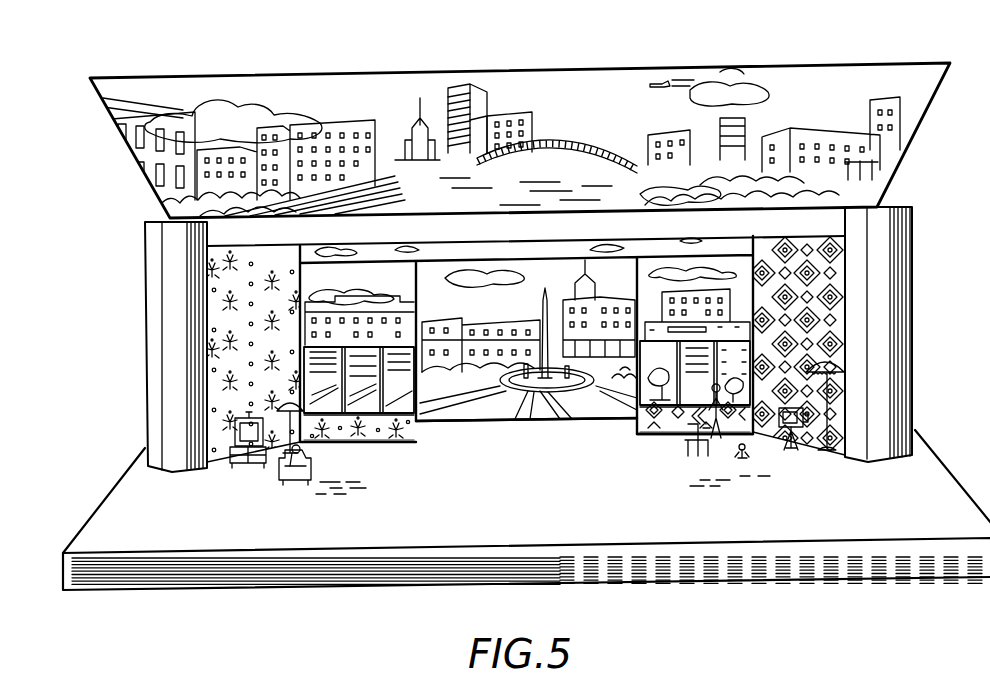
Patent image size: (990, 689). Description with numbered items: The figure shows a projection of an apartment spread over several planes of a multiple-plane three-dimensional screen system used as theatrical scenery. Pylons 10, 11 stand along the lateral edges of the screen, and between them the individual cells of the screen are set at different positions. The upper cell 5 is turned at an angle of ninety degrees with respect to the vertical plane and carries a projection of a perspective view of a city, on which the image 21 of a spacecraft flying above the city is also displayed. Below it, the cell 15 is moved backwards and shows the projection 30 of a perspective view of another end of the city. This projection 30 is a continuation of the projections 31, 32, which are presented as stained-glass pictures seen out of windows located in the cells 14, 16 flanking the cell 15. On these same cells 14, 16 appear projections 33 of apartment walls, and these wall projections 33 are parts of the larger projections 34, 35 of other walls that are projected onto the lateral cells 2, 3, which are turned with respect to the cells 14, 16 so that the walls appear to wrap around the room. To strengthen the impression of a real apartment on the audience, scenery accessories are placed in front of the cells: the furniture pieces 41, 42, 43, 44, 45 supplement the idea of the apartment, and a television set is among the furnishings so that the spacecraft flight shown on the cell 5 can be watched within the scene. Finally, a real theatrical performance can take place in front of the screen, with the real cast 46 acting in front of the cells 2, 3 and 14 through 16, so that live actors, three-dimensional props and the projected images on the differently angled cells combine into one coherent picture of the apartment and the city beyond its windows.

The cell 5 is at (544, 72).
The projection 30 is at (503, 114).
The image 21 is at (661, 78).
The pylon 10 is at (172, 303).
The pylon 11 is at (880, 378).
The cell 2 is at (218, 374).
The cell 3 is at (851, 329).
The projection 31 is at (384, 322).
The projection 32 is at (670, 301).
The cell 14 is at (372, 444).
The projection 33 is at (403, 442).
The cell 15 is at (532, 425).
The cell 16 is at (673, 437).
The projection 34 is at (228, 456).
The furniture piece 41 is at (258, 463).
The furniture piece 42 is at (288, 483).
The furniture piece 43 is at (691, 456).
The real cast 46 is at (725, 441).
The projection 35 is at (774, 434).
The furniture piece 44 is at (804, 440).
The furniture piece 45 is at (831, 449).